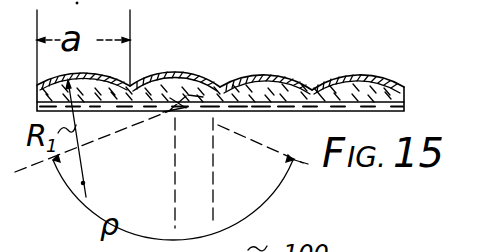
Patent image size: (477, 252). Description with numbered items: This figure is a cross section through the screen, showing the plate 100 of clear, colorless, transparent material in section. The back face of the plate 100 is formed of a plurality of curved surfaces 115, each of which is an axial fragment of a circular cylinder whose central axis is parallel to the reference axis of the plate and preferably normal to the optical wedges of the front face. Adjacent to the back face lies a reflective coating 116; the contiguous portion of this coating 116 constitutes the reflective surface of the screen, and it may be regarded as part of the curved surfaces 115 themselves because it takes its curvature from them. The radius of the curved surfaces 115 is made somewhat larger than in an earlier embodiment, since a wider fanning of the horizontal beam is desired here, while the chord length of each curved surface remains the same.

The plate 100 is at (402, 103).
The reflective coating 116 is at (172, 75).
The curved surfaces 115 is at (263, 74).